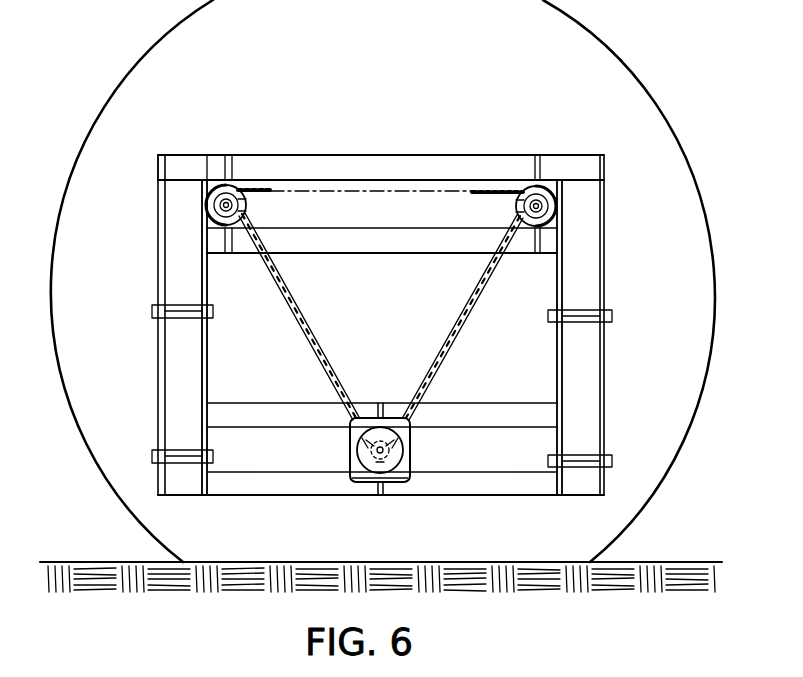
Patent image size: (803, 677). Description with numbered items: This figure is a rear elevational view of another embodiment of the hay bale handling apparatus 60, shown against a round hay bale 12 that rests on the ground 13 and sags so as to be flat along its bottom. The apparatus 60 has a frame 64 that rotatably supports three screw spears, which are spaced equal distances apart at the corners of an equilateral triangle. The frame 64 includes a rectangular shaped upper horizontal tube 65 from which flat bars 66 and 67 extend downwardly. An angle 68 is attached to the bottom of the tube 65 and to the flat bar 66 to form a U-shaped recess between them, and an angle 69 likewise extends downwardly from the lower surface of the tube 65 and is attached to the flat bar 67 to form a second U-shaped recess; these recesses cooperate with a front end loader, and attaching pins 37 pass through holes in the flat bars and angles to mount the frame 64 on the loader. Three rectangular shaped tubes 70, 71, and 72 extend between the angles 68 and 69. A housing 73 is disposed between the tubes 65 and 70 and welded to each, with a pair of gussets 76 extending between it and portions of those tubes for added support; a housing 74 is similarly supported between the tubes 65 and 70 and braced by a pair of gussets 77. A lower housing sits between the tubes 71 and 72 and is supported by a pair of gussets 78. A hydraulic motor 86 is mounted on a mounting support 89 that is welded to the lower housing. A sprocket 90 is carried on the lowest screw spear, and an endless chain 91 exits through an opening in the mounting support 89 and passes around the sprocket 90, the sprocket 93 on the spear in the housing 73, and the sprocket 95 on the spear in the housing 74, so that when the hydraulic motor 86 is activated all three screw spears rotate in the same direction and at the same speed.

The round hay bale 12 is at (600, 44).
The ground 13 is at (654, 562).
The attaching pins 37 is at (212, 302).
The hay bale handling apparatus 60 is at (334, 135).
The frame 64 is at (470, 157).
The upper horizontal tube 65 is at (184, 156).
The flat bar 66 is at (158, 398).
The flat bar 67 is at (606, 364).
The angle 68 is at (208, 356).
The angle 69 is at (557, 358).
The rectangular shaped tube 70 is at (398, 256).
The rectangular shaped tube 71 is at (282, 403).
The rectangular shaped tube 72 is at (272, 495).
The housing 73 is at (250, 207).
The housing 74 is at (517, 206).
The gussets 76 is at (234, 157).
The gussets 77 is at (542, 160).
The gussets 78 is at (387, 412).
The hydraulic motor 86 is at (405, 458).
The mounting support 89 is at (407, 480).
The sprocket 90 is at (385, 436).
The endless chain 91 is at (480, 320).
The sprocket 93 is at (234, 216).
The sprocket 95 is at (522, 222).